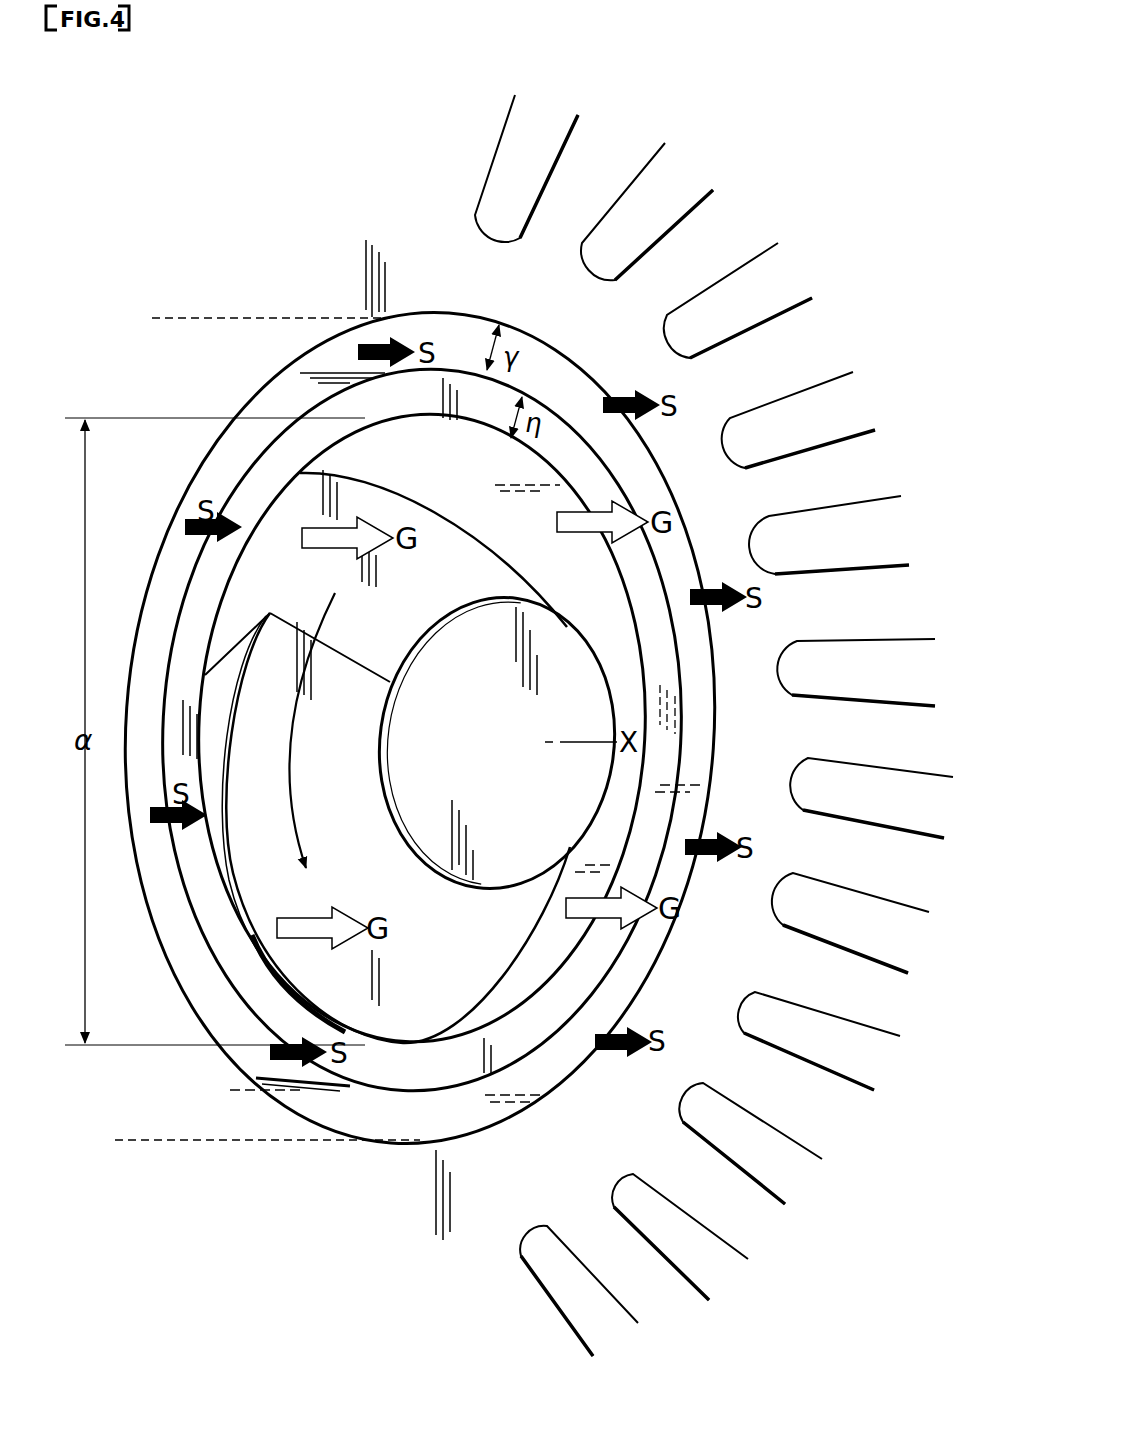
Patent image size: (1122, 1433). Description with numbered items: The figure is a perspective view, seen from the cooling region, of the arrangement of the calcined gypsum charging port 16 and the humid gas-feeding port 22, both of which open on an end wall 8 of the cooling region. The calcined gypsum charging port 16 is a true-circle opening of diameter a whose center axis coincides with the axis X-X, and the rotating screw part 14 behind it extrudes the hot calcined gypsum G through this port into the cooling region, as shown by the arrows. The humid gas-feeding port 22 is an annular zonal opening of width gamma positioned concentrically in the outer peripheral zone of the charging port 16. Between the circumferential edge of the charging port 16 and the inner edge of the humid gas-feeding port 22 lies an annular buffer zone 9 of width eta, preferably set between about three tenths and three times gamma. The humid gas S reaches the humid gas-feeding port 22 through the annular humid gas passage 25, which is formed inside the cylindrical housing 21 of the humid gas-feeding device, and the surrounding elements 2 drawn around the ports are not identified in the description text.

The rotor blade 2 is at (508, 150).
The end wall 8 is at (377, 248).
The annular buffer zone 9 is at (668, 713).
The screw part 14 is at (447, 600).
The calcined gypsum charging port 16 is at (592, 588).
The cylindrical housing 21 is at (212, 318).
The humid gas-feeding port 22 is at (552, 364).
The annular humid gas passage 25 is at (308, 368).